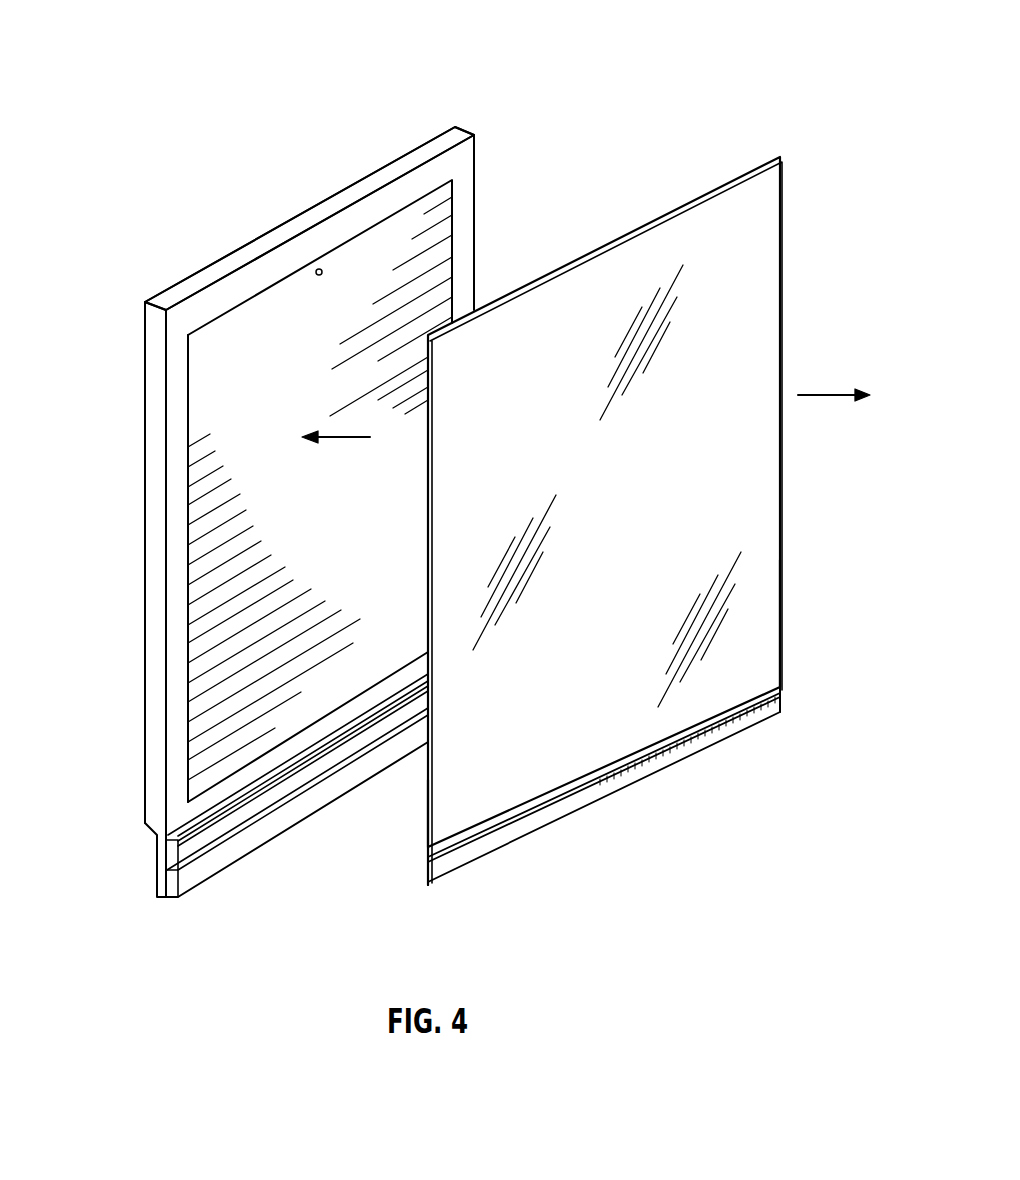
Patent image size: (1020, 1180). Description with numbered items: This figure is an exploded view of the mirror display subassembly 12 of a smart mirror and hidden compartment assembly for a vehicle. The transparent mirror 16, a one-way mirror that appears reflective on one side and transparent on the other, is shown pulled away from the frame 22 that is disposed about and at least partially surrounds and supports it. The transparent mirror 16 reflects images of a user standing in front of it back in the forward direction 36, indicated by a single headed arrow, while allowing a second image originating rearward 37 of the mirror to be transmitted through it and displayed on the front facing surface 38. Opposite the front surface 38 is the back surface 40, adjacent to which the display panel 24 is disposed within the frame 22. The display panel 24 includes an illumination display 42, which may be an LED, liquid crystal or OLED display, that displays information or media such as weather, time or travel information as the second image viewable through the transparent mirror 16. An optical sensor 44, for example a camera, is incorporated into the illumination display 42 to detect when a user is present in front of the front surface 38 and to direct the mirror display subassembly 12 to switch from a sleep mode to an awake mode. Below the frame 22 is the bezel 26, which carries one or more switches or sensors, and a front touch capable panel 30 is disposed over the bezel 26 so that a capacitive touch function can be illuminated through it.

The mirror display subassembly 12 is at (636, 54).
The transparent mirror 16 is at (782, 438).
The frame 22 is at (145, 302).
The display panel 24 is at (188, 335).
The bezel 26 is at (157, 867).
The front panel 30 is at (607, 793).
The forward direction 36 is at (818, 395).
The rearward direction 37 is at (345, 437).
The front facing surface 38 is at (760, 607).
The back surface 40 is at (428, 823).
The illumination display 42 is at (442, 230).
The optical sensor 44 is at (326, 266).